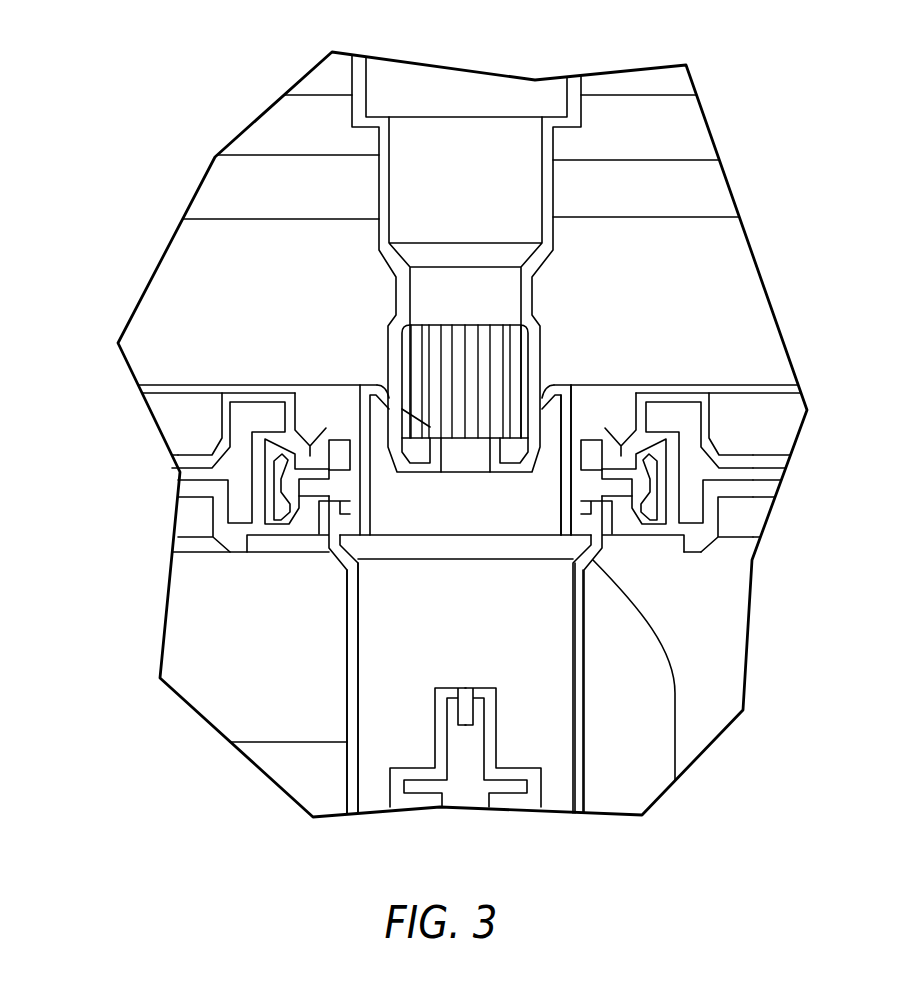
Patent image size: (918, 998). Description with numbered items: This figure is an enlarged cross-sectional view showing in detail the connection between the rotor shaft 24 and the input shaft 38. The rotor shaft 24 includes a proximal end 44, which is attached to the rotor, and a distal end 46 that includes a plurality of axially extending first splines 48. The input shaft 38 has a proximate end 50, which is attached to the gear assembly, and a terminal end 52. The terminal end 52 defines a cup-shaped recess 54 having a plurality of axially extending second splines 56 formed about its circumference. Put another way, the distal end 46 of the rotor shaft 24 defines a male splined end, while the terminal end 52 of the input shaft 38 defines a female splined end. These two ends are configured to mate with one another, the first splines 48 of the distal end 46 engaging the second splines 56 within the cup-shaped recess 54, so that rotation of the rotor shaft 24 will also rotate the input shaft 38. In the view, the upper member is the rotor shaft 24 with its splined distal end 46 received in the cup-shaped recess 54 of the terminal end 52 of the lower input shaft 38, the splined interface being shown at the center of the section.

The rotor shaft 24 is at (445, 187).
The input shaft 38 is at (446, 628).
The proximal end 44 is at (525, 191).
The distal end 46 is at (478, 353).
The first splines 48 is at (478, 353).
The proximate end 50 is at (530, 663).
The terminal end 52 is at (561, 420).
The cup-shaped recess 54 is at (430, 428).
The second splines 56 is at (430, 428).